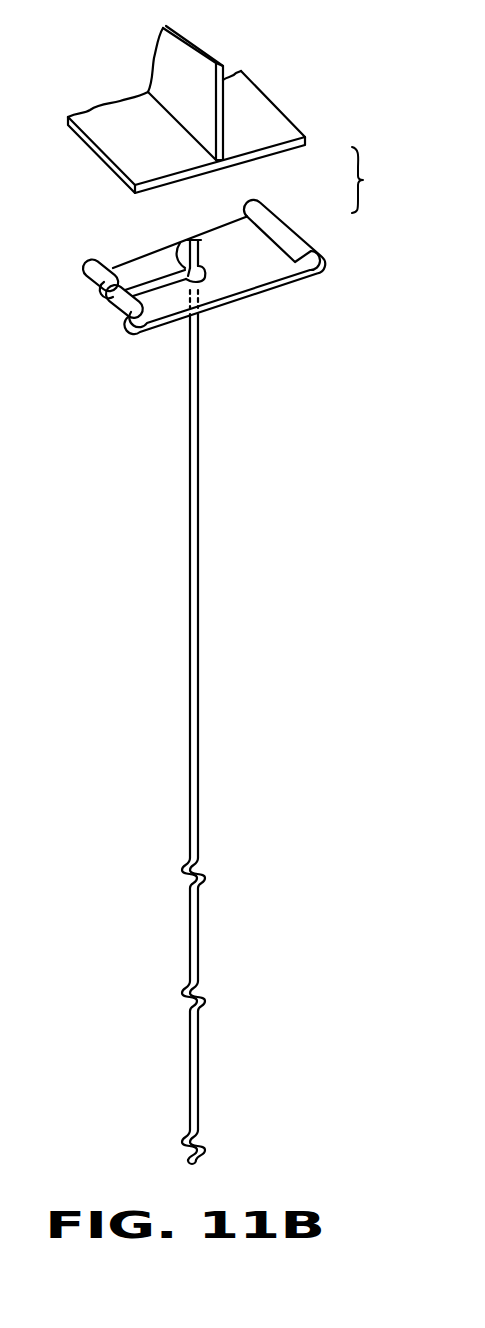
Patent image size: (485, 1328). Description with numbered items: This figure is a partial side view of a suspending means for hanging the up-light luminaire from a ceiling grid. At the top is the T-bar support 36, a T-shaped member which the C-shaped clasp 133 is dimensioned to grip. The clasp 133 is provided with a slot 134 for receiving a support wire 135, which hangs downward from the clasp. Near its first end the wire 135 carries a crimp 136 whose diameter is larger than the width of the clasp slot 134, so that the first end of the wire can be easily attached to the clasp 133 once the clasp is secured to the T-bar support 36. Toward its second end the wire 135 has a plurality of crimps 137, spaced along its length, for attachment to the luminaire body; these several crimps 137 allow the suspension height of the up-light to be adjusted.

The T-bar support 36 is at (277, 108).
The C-shaped clasp 133 is at (315, 278).
The clasp slot 134 is at (170, 297).
The support wire 135 is at (198, 553).
The crimp 136 is at (183, 257).
The crimps 137 is at (205, 873).